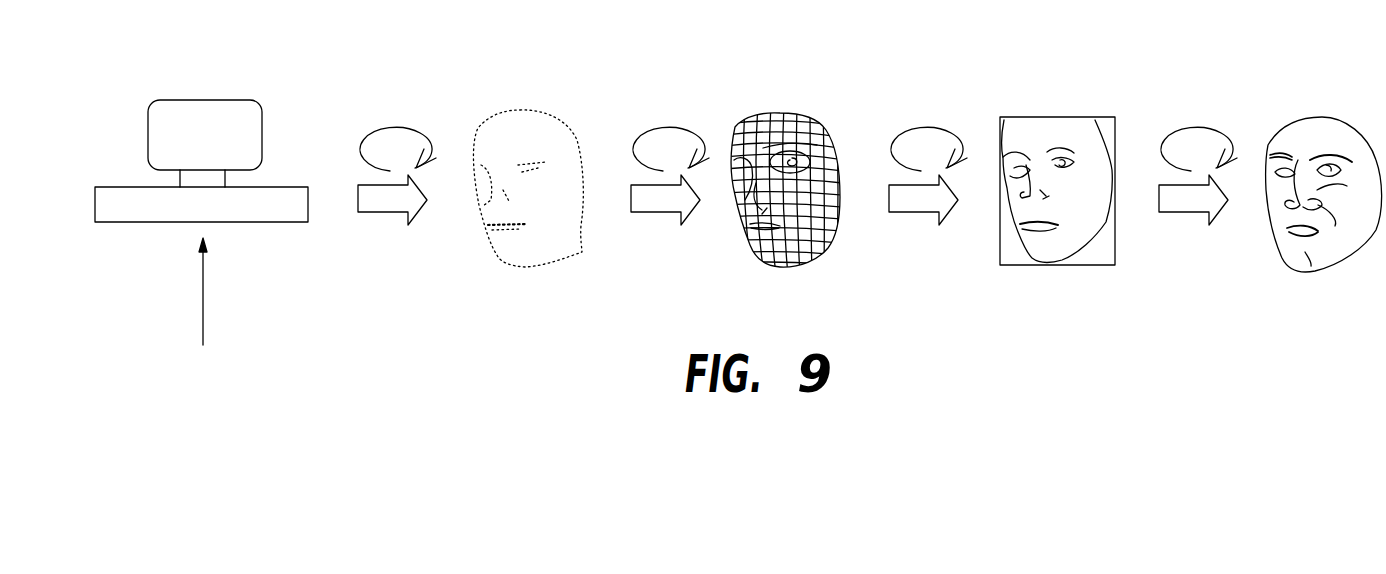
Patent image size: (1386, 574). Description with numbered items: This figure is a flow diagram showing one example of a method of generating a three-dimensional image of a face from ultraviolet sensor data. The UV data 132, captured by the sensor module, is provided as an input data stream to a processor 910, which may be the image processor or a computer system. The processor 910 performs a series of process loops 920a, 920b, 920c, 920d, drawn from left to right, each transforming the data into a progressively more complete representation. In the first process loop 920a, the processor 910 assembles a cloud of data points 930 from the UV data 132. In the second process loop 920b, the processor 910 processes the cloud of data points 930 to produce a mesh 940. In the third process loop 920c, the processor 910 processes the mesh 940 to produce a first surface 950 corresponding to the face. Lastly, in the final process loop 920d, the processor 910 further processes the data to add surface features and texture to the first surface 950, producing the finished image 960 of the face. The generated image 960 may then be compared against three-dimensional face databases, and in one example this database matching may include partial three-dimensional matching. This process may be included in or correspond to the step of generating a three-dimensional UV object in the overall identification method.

The processor 910 is at (209, 99).
The UV data 132 is at (202, 288).
The first process loop 920a is at (400, 127).
The cloud of data points 930 is at (518, 112).
The second process loop 920b is at (665, 125).
The mesh 940 is at (782, 112).
The third process loop 920c is at (925, 125).
The first surface 950 is at (1040, 117).
The fourth process loop 920d is at (1190, 128).
The image 960 is at (1310, 118).